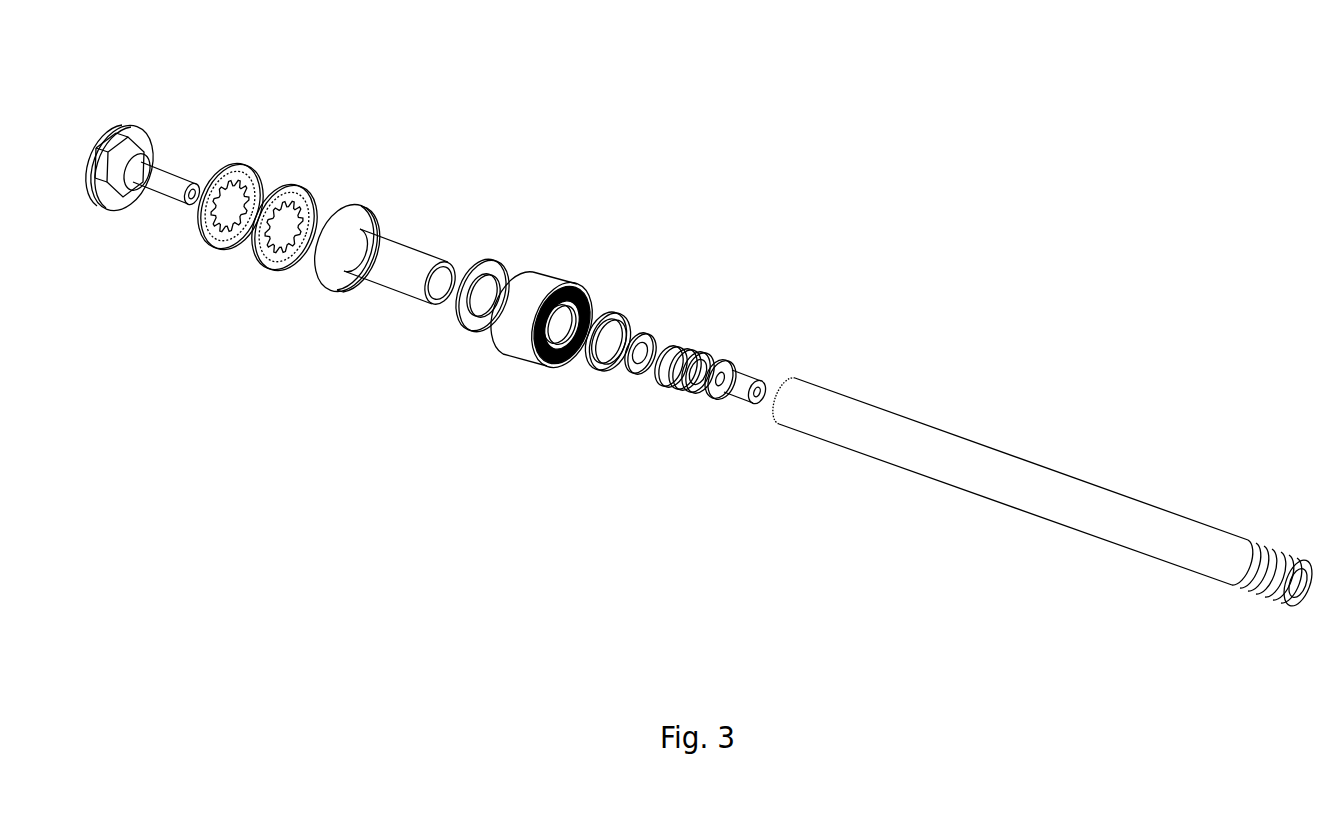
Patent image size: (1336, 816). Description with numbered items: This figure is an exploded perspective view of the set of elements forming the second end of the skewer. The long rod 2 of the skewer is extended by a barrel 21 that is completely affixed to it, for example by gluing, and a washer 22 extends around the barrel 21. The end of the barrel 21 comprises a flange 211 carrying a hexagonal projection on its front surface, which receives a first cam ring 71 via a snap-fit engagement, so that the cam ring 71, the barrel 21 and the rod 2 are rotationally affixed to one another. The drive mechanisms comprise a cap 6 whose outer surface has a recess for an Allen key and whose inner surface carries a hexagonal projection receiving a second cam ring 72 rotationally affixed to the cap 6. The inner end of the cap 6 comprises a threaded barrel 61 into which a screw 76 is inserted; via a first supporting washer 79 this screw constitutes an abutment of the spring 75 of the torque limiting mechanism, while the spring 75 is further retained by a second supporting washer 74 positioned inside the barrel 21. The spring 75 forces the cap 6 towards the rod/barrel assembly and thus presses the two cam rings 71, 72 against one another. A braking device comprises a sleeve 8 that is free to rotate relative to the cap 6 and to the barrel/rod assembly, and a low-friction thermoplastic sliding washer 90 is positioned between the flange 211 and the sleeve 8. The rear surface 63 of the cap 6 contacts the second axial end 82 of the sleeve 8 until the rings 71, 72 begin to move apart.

The rod 2 is at (1045, 486).
The cap 6 is at (168, 164).
The threaded barrel 61 is at (195, 123).
The rear surface 63 is at (125, 202).
The second cam ring 72 is at (257, 174).
The first cam ring 71 is at (314, 195).
The flange 211 is at (390, 217).
The barrel 21 is at (402, 221).
The sliding washer 90 is at (519, 263).
The sleeve 8 is at (529, 311).
The second axial end 82 is at (506, 336).
The washer 22 is at (637, 314).
The second supporting washer 74 is at (674, 328).
The spring 75 is at (687, 439).
The first supporting washer 79 is at (735, 419).
The screw 76 is at (776, 358).